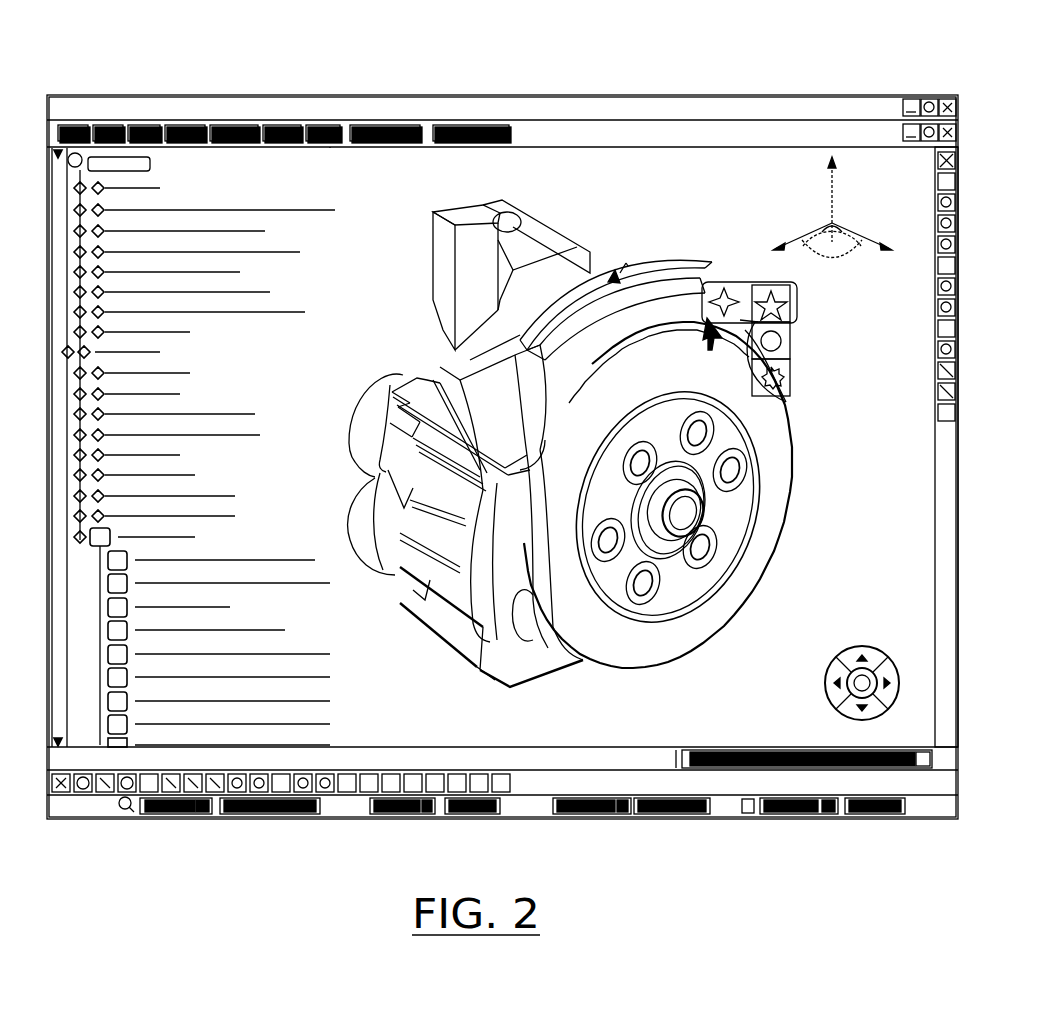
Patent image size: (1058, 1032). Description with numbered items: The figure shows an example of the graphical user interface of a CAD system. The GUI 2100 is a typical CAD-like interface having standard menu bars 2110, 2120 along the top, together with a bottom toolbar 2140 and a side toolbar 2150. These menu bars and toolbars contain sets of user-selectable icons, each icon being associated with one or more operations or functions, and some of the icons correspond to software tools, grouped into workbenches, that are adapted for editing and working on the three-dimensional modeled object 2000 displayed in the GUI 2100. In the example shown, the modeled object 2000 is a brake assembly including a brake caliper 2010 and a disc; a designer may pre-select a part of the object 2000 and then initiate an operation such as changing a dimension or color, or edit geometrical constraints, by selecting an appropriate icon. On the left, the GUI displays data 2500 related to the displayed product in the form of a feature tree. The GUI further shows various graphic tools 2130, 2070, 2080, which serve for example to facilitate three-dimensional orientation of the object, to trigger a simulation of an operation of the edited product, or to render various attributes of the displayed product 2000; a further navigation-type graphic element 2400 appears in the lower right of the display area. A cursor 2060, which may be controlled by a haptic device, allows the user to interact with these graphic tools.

The 3D modeled object 2000 is at (393, 272).
The brake caliper 2010 is at (450, 378).
The cursor 2060 is at (787, 400).
The graphic tool 2070 is at (730, 286).
The graphic tool 2080 is at (786, 340).
The GUI 2100 is at (767, 675).
The menu bar 2110 is at (611, 102).
The menu bar 2120 is at (704, 135).
The graphic tool 2130 is at (848, 262).
The bottom toolbar 2140 is at (512, 748).
The side toolbar 2150 is at (940, 437).
The navigation widget 2400 is at (852, 628).
The data 2500 is at (176, 430).